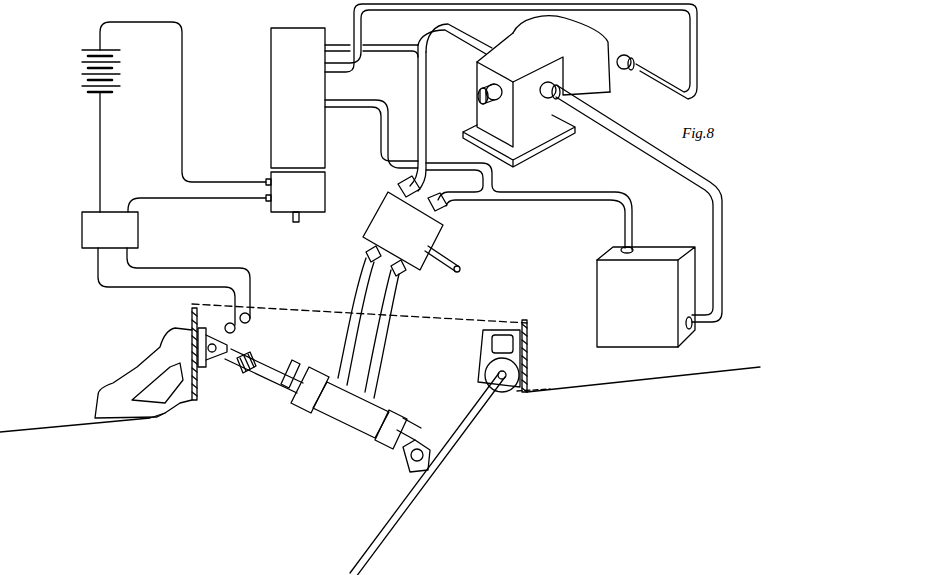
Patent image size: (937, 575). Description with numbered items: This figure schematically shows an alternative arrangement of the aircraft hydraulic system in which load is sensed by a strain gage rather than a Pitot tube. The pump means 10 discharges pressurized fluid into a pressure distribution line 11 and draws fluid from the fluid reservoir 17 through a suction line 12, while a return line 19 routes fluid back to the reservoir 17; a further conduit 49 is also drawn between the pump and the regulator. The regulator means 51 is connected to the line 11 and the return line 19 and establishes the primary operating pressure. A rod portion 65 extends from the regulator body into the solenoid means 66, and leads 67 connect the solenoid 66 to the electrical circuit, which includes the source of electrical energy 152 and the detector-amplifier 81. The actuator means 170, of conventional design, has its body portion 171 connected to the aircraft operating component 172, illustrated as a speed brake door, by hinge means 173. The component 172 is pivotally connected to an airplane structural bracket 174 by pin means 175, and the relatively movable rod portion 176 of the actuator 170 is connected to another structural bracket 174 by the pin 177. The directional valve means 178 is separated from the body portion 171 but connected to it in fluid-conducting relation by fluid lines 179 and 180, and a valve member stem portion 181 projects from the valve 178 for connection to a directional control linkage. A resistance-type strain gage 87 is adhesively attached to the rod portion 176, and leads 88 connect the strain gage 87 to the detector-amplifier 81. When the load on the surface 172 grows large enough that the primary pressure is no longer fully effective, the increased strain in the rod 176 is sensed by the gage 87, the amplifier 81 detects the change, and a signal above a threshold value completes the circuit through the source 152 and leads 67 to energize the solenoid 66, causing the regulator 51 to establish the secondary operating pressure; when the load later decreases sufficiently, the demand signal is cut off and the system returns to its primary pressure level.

The pump means 10 is at (597, 84).
The pressure distribution line 11 is at (462, 34).
The suction line 12 is at (724, 220).
The fluid reservoir 17 is at (655, 299).
The return line 19 is at (386, 126).
The conduit 49 is at (378, 10).
The regulator means 51 is at (308, 99).
The rod portion 65 is at (299, 222).
The solenoid means 66 is at (308, 202).
The leads 67 is at (180, 198).
The detector-amplifier 81 is at (120, 238).
The strain gage 87 is at (246, 372).
The leads 88 is at (240, 316).
The source of electrical energy 152 is at (82, 70).
The actuator means 170 is at (355, 422).
The body portion 171 is at (347, 430).
The aircraft operating component 172 is at (445, 478).
The hinge means 173 is at (410, 470).
The structural bracket 174 is at (190, 345).
The pin means 175 is at (505, 392).
The rod portion 176 is at (276, 371).
The pin 177 is at (212, 358).
The directional valve means 178 is at (432, 236).
The fluid line 179 is at (362, 266).
The fluid line 180 is at (394, 340).
The valve member stem portion 181 is at (458, 268).